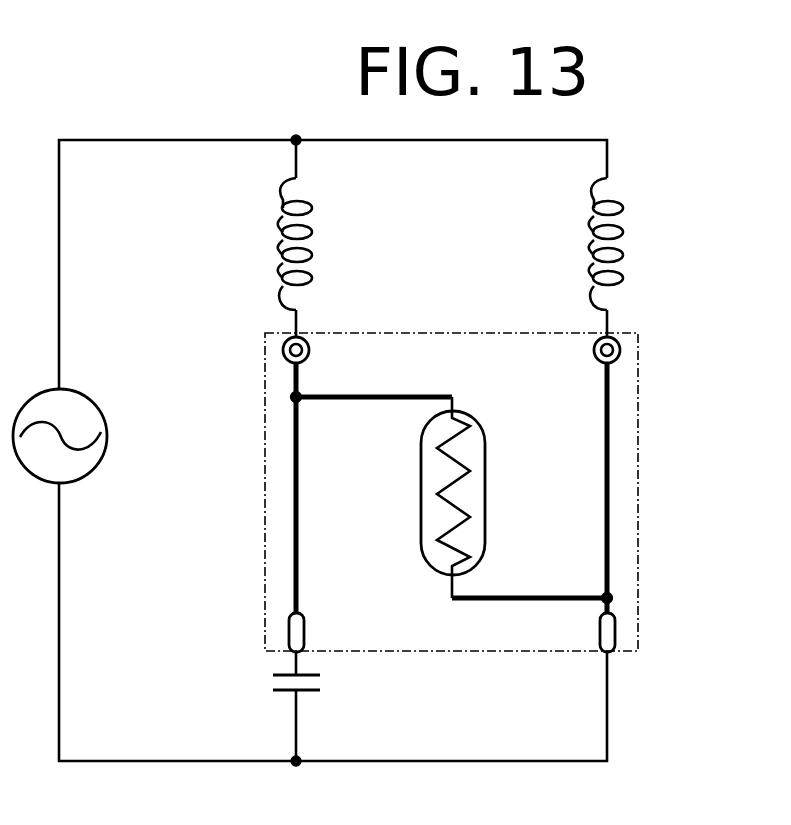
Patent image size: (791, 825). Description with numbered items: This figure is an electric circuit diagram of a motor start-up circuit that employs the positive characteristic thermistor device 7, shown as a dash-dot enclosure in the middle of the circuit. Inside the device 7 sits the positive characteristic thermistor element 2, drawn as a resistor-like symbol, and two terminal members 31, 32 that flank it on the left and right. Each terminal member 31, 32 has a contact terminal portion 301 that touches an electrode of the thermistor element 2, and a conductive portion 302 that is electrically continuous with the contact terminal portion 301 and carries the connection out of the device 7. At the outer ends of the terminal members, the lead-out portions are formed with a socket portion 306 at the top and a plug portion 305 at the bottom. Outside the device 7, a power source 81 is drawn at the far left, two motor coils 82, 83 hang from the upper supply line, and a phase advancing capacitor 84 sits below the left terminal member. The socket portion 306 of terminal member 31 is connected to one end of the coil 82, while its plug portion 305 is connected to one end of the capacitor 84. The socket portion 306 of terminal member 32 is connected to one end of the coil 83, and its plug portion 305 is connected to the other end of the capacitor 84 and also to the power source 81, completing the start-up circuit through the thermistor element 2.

The positive characteristic thermistor element 2 is at (486, 484).
The positive characteristic thermistor device 7 is at (640, 392).
The terminal member 31 is at (296, 481).
The terminal member 32 is at (612, 504).
The power source 81 is at (107, 440).
The motor coil 82 is at (312, 256).
The motor coil 83 is at (623, 256).
The phase advancing capacitor 84 is at (318, 686).
The contact terminal portion 301 is at (450, 396).
The conductive portion 302 is at (299, 500).
The plug portion 305 is at (300, 631).
The socket portion 306 is at (309, 352).